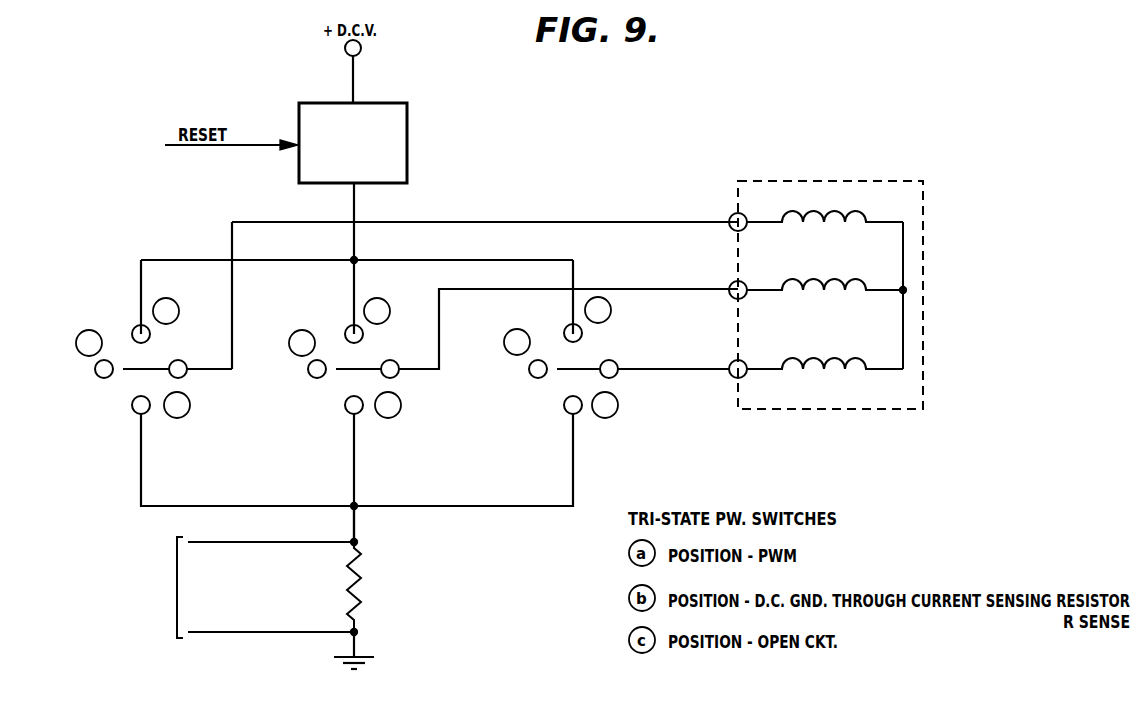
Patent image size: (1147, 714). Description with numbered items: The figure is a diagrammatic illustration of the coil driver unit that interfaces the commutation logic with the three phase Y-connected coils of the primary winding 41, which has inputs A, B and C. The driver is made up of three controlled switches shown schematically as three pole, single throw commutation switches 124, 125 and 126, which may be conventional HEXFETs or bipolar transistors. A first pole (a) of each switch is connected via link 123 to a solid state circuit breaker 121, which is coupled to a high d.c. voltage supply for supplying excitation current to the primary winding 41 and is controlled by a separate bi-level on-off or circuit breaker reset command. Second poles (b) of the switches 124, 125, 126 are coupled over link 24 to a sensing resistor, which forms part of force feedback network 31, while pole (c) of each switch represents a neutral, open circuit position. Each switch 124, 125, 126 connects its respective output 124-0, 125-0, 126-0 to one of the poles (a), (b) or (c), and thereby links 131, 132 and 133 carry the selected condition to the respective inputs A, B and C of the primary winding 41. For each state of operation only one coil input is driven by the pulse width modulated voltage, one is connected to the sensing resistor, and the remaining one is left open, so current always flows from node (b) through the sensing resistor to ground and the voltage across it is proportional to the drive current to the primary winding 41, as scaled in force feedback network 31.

The solid state circuit breaker 121 is at (409, 151).
The link 123 is at (356, 210).
The commutation switch 124 is at (167, 358).
The commutation switch 125 is at (381, 358).
The commutation switch 126 is at (600, 357).
The output of commutation switch 124-0 is at (185, 375).
The output of commutation switch 125-0 is at (397, 375).
The output of commutation switch 126-0 is at (616, 375).
The link 131 is at (606, 219).
The link 132 is at (627, 287).
The link 133 is at (672, 366).
The primary winding 41 is at (849, 181).
The link 24 is at (357, 527).
The force feedback network 31 is at (277, 603).